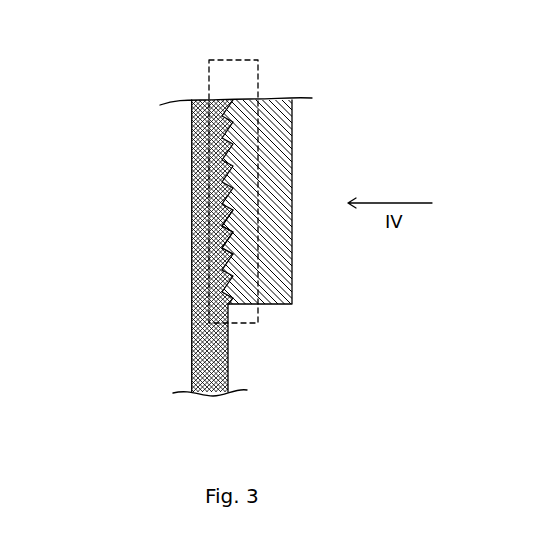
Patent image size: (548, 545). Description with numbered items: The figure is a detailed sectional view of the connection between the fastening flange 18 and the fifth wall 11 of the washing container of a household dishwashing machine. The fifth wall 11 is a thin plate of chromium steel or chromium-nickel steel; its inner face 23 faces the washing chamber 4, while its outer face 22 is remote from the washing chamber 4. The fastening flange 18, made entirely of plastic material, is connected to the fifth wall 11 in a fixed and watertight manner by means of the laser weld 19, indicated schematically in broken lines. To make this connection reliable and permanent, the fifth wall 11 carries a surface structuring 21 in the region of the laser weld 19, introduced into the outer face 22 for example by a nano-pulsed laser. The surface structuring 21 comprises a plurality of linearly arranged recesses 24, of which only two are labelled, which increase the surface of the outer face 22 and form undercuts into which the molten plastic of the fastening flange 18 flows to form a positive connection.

The washing chamber 4 is at (78, 131).
The fifth wall 11 is at (184, 360).
The fastening flange 18 is at (292, 158).
The laser weld 19 is at (232, 59).
The surface structuring 21 is at (105, 175).
The outer face 22 is at (228, 357).
The inner face 23 is at (190, 175).
The recesses 24 is at (225, 223).